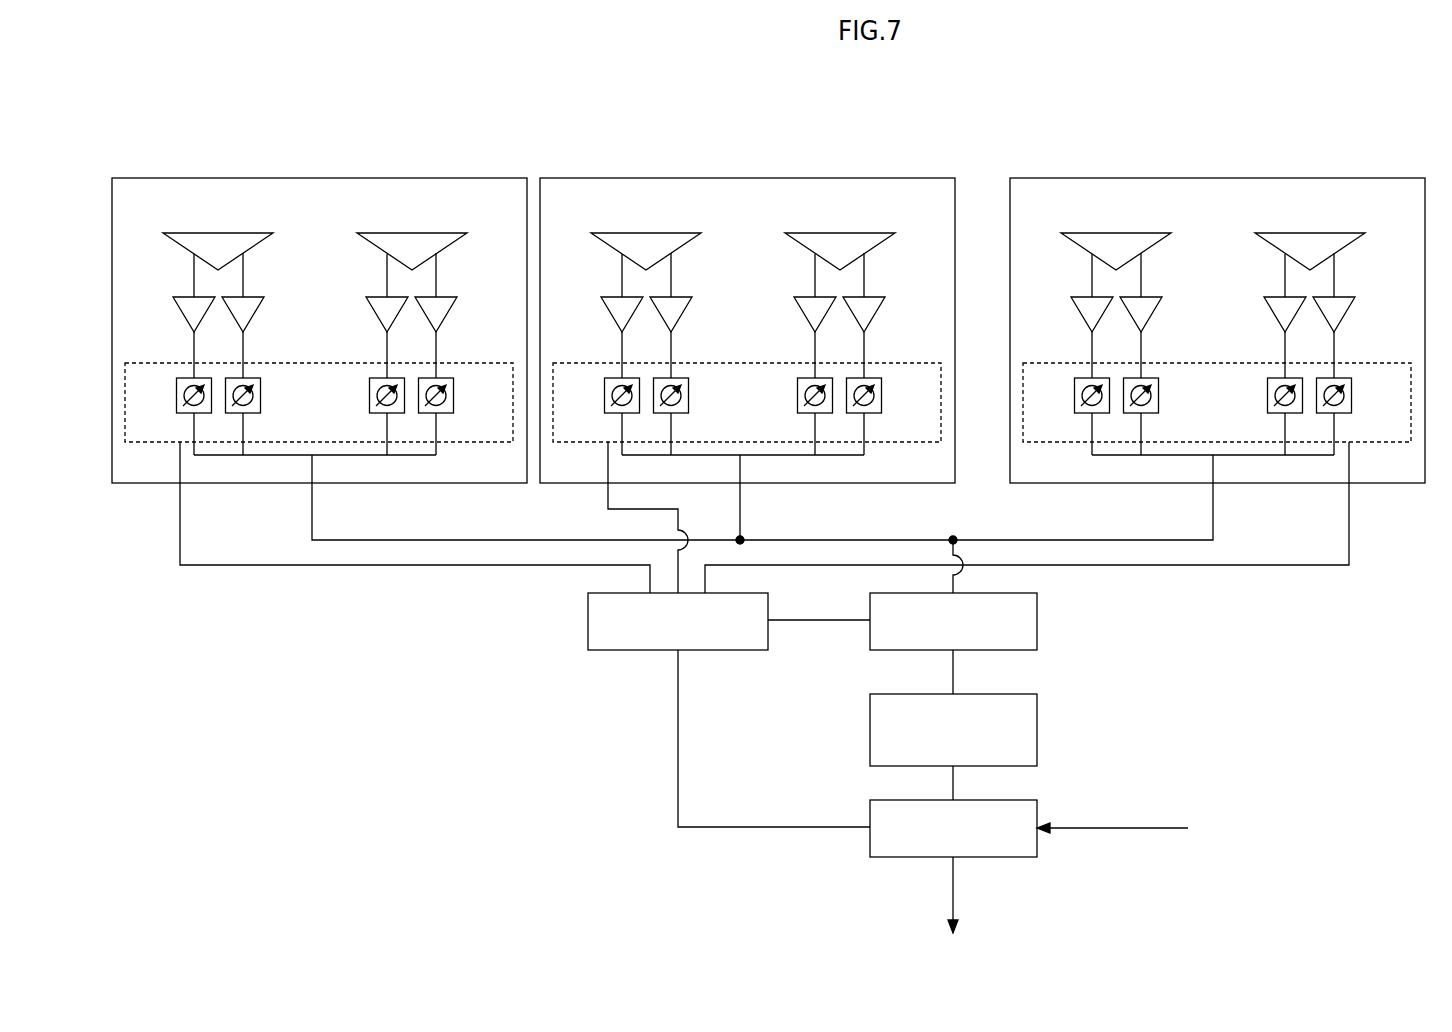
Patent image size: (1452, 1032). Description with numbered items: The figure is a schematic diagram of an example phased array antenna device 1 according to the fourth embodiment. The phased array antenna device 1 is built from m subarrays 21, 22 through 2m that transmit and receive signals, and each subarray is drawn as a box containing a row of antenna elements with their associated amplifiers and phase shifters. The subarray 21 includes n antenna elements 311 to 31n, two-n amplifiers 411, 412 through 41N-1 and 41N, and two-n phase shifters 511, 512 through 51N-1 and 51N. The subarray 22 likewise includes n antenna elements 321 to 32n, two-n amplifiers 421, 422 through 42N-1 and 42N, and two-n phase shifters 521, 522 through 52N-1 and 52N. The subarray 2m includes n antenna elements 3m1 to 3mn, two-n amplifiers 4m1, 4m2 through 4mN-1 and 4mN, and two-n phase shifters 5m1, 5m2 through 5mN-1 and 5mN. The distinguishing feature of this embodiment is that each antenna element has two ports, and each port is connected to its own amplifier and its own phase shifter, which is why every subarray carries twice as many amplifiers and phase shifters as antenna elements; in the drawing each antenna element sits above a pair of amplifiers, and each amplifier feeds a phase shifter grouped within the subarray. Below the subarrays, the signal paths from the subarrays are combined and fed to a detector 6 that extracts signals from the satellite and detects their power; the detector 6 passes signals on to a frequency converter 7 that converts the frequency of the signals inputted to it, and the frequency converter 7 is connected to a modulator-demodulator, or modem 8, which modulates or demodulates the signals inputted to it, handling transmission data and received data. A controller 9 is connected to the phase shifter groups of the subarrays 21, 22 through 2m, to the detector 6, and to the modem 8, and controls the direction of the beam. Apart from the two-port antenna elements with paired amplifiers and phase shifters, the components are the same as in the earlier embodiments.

The phased array antenna device 1 is at (338, 118).
The subarray 21 is at (484, 178).
The subarray 22 is at (913, 178).
The subarray 2m is at (1381, 178).
The antenna element 311 is at (181, 234).
The antenna element 31n is at (374, 234).
The antenna element 321 is at (609, 234).
The antenna element 32n is at (802, 234).
The antenna element 3m1 is at (1079, 234).
The antenna element 3mn is at (1272, 234).
The amplifier 411 is at (185, 319).
The amplifier 412 is at (252, 319).
The amplifier 41N-1 is at (378, 319).
The amplifier 41N is at (444, 319).
The amplifier 421 is at (613, 319).
The amplifier 422 is at (680, 319).
The amplifier 42N-1 is at (806, 319).
The amplifier 42N is at (872, 319).
The amplifier 4m1 is at (1083, 319).
The amplifier 4m2 is at (1150, 319).
The amplifier 4mN-1 is at (1276, 319).
The amplifier 4mN is at (1342, 319).
The phase shifter 511 is at (177, 398).
The phase shifter 512 is at (261, 398).
The phase shifter 51N-1 is at (370, 398).
The phase shifter 51N is at (453, 398).
The phase shifter 521 is at (605, 398).
The phase shifter 522 is at (707, 402).
The phase shifter 52N-1 is at (798, 398).
The phase shifter 52N is at (881, 398).
The phase shifter 5m1 is at (1075, 398).
The phase shifter 5m2 is at (1177, 402).
The phase shifter 5mN-1 is at (1268, 398).
The phase shifter 5mN is at (1351, 398).
The detector 6 is at (870, 637).
The frequency converter 7 is at (870, 748).
The modulator-demodulator (modem) 8 is at (870, 843).
The controller 9 is at (588, 642).